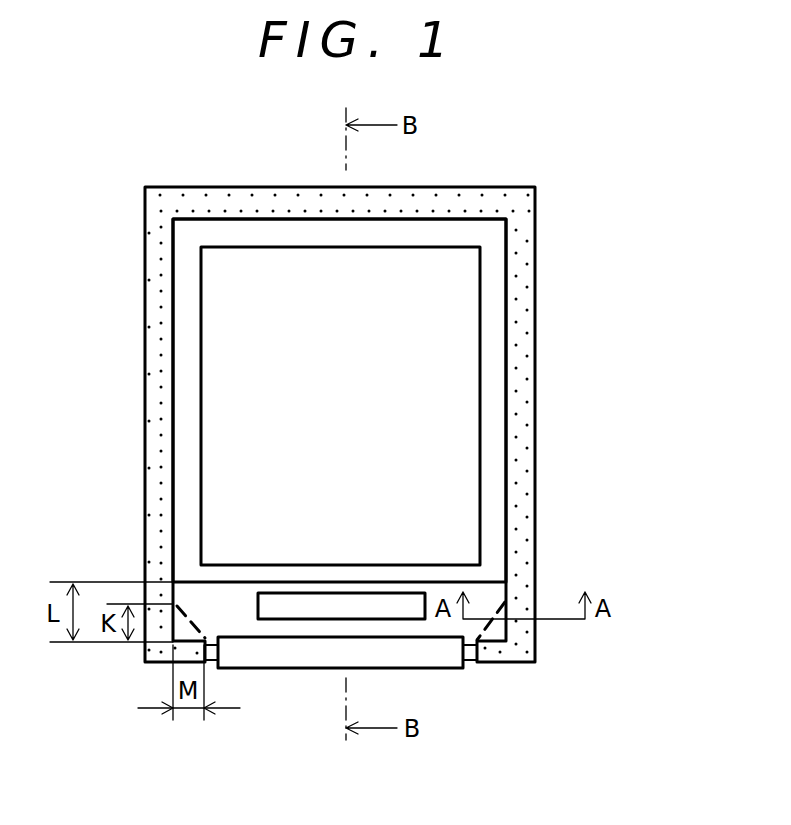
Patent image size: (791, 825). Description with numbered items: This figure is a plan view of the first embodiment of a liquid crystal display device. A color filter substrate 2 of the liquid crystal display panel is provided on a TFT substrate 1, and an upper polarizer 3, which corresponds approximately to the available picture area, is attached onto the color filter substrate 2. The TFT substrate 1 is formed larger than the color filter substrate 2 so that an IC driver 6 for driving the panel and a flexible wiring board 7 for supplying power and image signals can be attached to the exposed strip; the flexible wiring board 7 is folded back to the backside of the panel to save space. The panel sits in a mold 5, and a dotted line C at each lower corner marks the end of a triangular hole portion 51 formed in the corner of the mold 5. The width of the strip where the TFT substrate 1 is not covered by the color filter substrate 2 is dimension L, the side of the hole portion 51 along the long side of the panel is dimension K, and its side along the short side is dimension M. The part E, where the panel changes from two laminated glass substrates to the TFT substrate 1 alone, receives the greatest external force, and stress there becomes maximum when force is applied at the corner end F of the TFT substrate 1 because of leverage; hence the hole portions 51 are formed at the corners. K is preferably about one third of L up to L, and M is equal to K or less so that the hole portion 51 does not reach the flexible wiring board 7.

The TFT substrate 1 is at (192, 588).
The color filter substrate 2 is at (508, 475).
The upper polarizer 3 is at (480, 430).
The mold 5 is at (537, 373).
The IC driver 6 is at (280, 620).
The flexible wiring board 7 is at (440, 670).
The hole portion 51 is at (500, 632).
The dotted line C is at (196, 626).
The part where greatest external force is applied E is at (510, 580).
The corner end of TFT substrate F is at (507, 650).